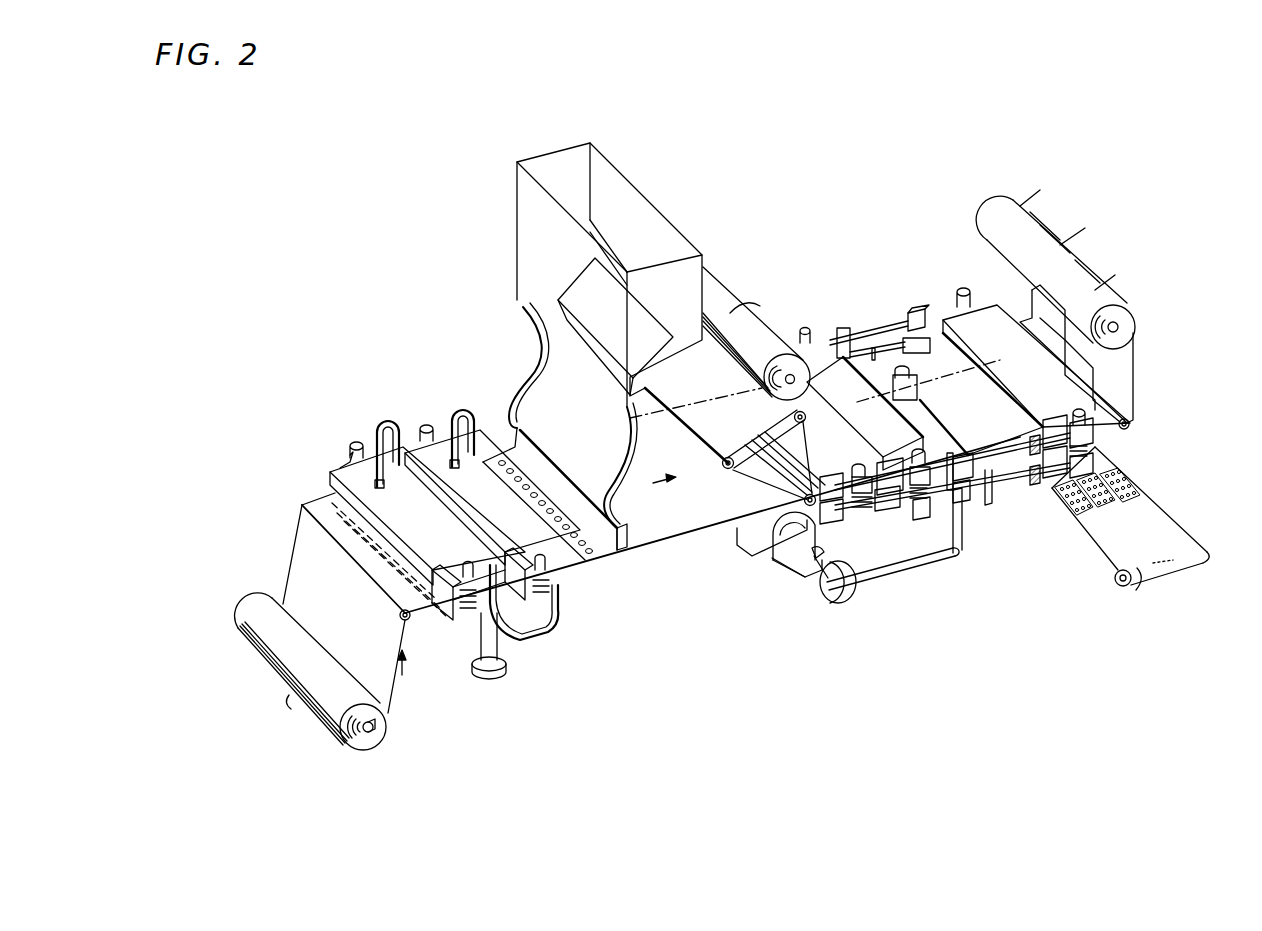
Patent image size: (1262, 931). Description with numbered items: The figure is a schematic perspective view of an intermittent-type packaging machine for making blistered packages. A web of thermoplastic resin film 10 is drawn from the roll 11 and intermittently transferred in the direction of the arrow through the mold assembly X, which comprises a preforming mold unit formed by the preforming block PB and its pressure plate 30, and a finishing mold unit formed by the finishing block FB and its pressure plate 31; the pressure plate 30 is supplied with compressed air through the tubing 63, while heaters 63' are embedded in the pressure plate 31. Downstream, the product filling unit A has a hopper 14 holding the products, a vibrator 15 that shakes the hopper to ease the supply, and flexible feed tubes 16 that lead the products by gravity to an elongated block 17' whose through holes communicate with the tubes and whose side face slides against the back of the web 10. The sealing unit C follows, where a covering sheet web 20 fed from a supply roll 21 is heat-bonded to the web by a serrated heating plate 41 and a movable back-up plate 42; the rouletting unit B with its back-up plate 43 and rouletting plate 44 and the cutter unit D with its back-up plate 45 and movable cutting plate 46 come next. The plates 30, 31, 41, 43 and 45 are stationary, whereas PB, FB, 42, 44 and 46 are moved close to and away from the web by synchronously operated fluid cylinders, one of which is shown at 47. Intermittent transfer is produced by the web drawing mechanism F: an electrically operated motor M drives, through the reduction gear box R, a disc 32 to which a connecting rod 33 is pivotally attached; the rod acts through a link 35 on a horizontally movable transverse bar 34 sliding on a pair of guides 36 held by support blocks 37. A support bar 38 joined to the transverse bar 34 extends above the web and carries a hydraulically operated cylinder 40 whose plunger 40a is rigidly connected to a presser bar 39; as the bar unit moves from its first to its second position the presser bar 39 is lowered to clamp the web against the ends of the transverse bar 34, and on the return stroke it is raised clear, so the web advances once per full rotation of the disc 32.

The thermoplastic resin web 10 is at (667, 545).
The roll 11 is at (386, 737).
The hopper 14 is at (616, 184).
The vibrator 15 is at (582, 287).
The flexible feed tubes 16 is at (530, 390).
The elongated block 17' is at (579, 494).
The covering sheet web 20 is at (733, 472).
The supply roll 21 is at (760, 324).
The pressure plate 30 is at (343, 473).
The pressure plate 31 is at (565, 562).
The disc 32 is at (843, 604).
The connecting rod 33 is at (927, 563).
The transverse bar 34 is at (1001, 478).
The link 35 is at (980, 506).
The guides 36 is at (892, 345).
The support blocks 37 is at (887, 343).
The support bar 38 is at (935, 412).
The presser bar 39 is at (893, 388).
The hydraulically operated cylinder 40 is at (930, 405).
The plunger 40a is at (984, 375).
The heating plate 41 is at (740, 535).
The movable back-up plate 42 is at (862, 517).
The back-up plate 43 is at (827, 355).
The rouletting plate 44 is at (963, 518).
The back-up plate 45 is at (992, 305).
The movable cutting plate 46 is at (1097, 447).
The fluid operated cylinder 47 is at (493, 673).
The tubing 63 is at (356, 426).
The heaters 63' is at (436, 397).
The product filling unit A is at (655, 224).
The rouletting unit B is at (930, 534).
The sealing unit C is at (840, 535).
The cutter unit D is at (961, 272).
The exit conveyor E is at (1167, 523).
The web drawing mechanism F is at (993, 476).
The electrically operated motor M is at (785, 567).
The cards P is at (1140, 482).
The preforming block PB is at (440, 622).
The reduction gear box R is at (799, 572).
The mold assembly X is at (390, 413).
The finishing block FB is at (556, 597).